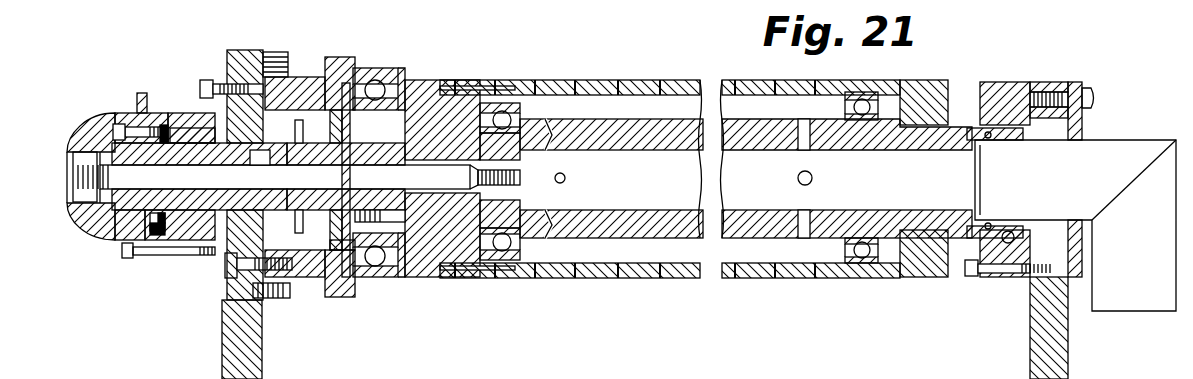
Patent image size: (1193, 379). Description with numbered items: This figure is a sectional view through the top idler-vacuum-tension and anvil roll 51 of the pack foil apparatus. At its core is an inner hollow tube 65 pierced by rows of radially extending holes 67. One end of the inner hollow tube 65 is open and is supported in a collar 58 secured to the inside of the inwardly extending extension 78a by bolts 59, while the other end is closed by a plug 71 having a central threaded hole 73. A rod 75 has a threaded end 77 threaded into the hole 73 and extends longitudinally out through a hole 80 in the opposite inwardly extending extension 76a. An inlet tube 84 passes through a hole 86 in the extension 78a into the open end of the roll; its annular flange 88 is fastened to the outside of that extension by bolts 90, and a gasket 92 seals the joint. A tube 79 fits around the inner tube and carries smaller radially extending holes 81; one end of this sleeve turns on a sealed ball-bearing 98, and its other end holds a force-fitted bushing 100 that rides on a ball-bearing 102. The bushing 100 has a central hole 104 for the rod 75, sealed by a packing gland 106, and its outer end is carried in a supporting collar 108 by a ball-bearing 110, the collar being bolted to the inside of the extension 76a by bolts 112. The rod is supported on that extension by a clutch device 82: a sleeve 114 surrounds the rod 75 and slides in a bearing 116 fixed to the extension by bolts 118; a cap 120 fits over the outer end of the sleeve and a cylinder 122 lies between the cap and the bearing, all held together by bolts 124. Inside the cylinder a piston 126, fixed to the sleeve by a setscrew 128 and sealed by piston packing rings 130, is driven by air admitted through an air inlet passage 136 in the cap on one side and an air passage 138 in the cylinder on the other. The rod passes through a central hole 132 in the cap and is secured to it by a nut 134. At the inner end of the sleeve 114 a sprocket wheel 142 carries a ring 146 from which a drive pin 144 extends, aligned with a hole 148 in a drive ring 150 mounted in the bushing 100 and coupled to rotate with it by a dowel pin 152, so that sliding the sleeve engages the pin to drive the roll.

The top idler-vacuum-tension and anvil roll 51 is at (599, 78).
The collar 58 is at (998, 84).
The bolts 59 is at (1005, 268).
The inner hollow tube 65 is at (762, 127).
The radially extending holes 67 is at (808, 147).
The plug 71 is at (510, 160).
The central threaded hole 73 is at (518, 180).
The rod 75 is at (417, 187).
The inwardly extending extension 76a is at (255, 327).
The threaded end 77 is at (564, 172).
The inwardly extending extension 78a is at (1069, 317).
The tube 79 is at (683, 80).
The hole 80 is at (245, 97).
The radially extending holes 81 is at (740, 80).
The clutch device 82 is at (91, 118).
The inlet tube 84 is at (1148, 298).
The hole 86 is at (1046, 98).
The annular flange 88 is at (1083, 127).
The bolts 90 is at (1090, 88).
The gasket 92 is at (1003, 231).
The sealed ball-bearing 98 is at (889, 93).
The bushing 100 is at (465, 98).
The ball-bearing 102 is at (503, 103).
The central hole 104 is at (416, 160).
The packing gland 106 is at (402, 139).
The supporting collar 108 is at (326, 70).
The ball-bearing 110 is at (369, 74).
The bolts 112 is at (290, 276).
The sleeve 114 is at (257, 152).
The bearing 116 is at (233, 147).
The bolts 118 is at (206, 80).
The cap 120 is at (88, 220).
The cylinder 122 is at (188, 113).
The bolts 124 is at (152, 249).
The piston 126 is at (162, 222).
The setscrew 128 is at (163, 126).
The piston packing rings 130 is at (156, 228).
The central hole 132 is at (112, 222).
The nut 134 is at (76, 158).
The air inlet passage 136 is at (133, 127).
The air passage 138 is at (197, 110).
The sprocket wheel 142 is at (290, 150).
The drive pin 144 is at (345, 130).
The ring 146 is at (327, 235).
The hole 148 is at (408, 85).
The drive ring 150 is at (395, 207).
The dowel pin 152 is at (404, 244).